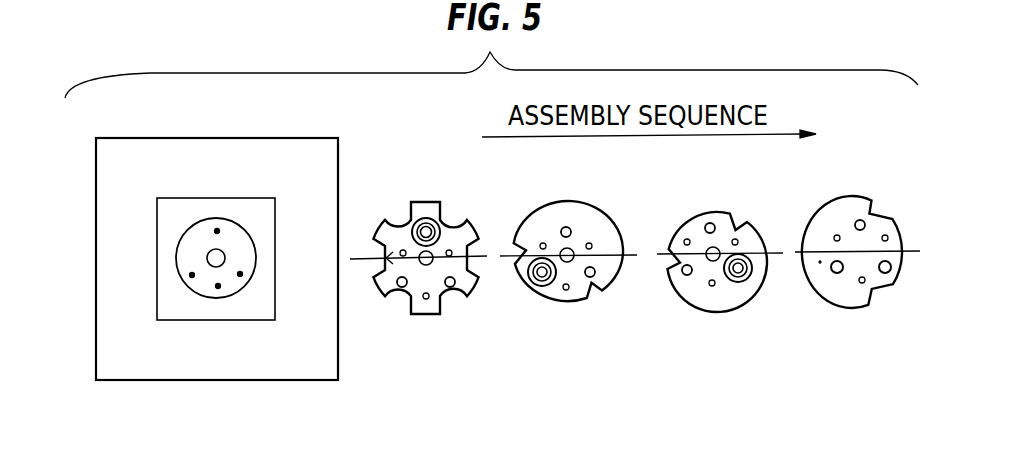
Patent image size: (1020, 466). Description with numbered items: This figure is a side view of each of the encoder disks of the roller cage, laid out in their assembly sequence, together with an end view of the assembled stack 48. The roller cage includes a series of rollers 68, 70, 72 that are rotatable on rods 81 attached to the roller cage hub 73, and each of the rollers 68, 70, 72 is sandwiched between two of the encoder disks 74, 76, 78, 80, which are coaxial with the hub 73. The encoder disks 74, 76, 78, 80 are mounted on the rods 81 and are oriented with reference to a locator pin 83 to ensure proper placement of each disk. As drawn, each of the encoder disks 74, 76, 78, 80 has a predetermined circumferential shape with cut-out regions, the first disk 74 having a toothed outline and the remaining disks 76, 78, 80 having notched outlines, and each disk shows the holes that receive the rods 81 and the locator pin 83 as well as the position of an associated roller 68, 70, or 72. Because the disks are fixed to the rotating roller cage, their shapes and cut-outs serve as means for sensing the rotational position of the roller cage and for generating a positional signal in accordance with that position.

The assembled disc unit 48 is at (146, 131).
The roller cage hub 73 is at (238, 220).
The rods 81 is at (235, 282).
The locator pin 83 is at (226, 275).
The roller 68 is at (441, 221).
The encoder disk 74 is at (470, 291).
The roller 70 is at (530, 282).
The encoder disk 76 is at (558, 301).
The encoder disk 78 is at (714, 212).
The roller 72 is at (746, 285).
The encoder disk 80 is at (825, 204).